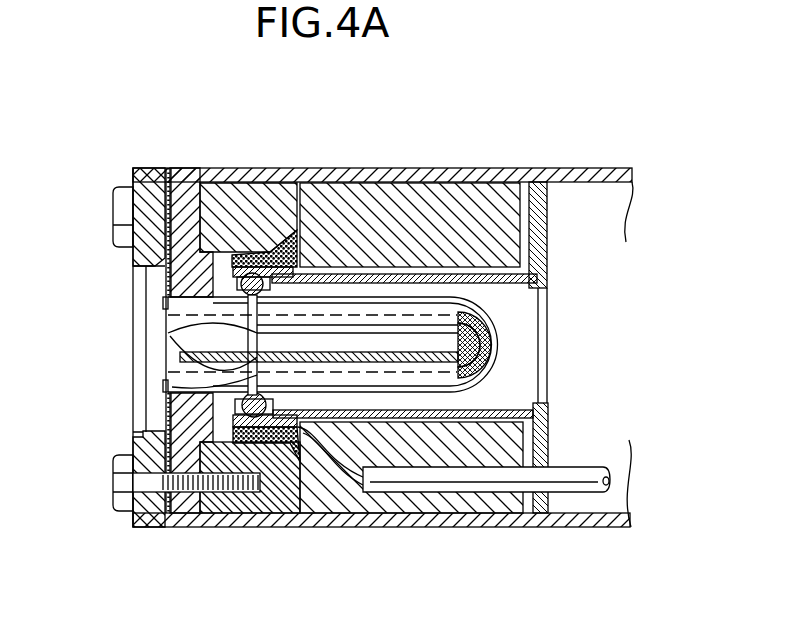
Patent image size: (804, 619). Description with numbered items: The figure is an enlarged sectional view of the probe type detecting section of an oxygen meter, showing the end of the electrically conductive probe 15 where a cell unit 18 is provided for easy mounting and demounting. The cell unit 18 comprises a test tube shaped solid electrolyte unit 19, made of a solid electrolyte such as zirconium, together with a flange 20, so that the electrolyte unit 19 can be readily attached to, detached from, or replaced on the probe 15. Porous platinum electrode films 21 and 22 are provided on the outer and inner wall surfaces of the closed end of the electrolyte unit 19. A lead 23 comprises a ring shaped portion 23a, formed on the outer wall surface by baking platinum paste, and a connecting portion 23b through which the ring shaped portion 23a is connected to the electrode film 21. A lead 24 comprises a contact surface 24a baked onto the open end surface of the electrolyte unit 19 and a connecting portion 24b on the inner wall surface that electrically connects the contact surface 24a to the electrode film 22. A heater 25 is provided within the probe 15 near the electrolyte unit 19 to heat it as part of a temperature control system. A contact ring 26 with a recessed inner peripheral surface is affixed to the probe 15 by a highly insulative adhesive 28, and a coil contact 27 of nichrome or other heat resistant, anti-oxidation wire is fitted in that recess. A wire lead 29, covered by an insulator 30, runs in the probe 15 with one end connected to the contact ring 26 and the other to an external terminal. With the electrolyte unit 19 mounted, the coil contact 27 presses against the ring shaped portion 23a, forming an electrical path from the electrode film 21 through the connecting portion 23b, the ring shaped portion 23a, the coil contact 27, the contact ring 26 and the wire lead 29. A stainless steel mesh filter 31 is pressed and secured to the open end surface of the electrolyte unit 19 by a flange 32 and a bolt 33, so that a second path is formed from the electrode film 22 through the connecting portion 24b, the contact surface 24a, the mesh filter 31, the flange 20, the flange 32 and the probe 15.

The probe 15 is at (533, 168).
The cell unit 18 is at (325, 105).
The solid electrolyte unit 19 is at (347, 305).
The flange 20 is at (183, 168).
The porous platinum electrode film 21 is at (488, 320).
The porous platinum electrode film 22 is at (472, 368).
The lead 23 is at (72, 302).
The ring shaped portion 23a is at (256, 337).
The connecting portion 23b is at (180, 363).
The lead 24 is at (57, 373).
The contact surface 24a is at (180, 372).
The connecting portion 24b is at (181, 386).
The heater 25 is at (448, 200).
The contact ring 26 is at (282, 450).
The coil contact 27 is at (300, 440).
The insulative adhesive 28 is at (330, 478).
The wire lead 29 is at (395, 518).
The insulator 30 is at (500, 478).
The mesh filter 31 is at (158, 290).
The flange 32 is at (145, 168).
The bolt 33 is at (142, 460).